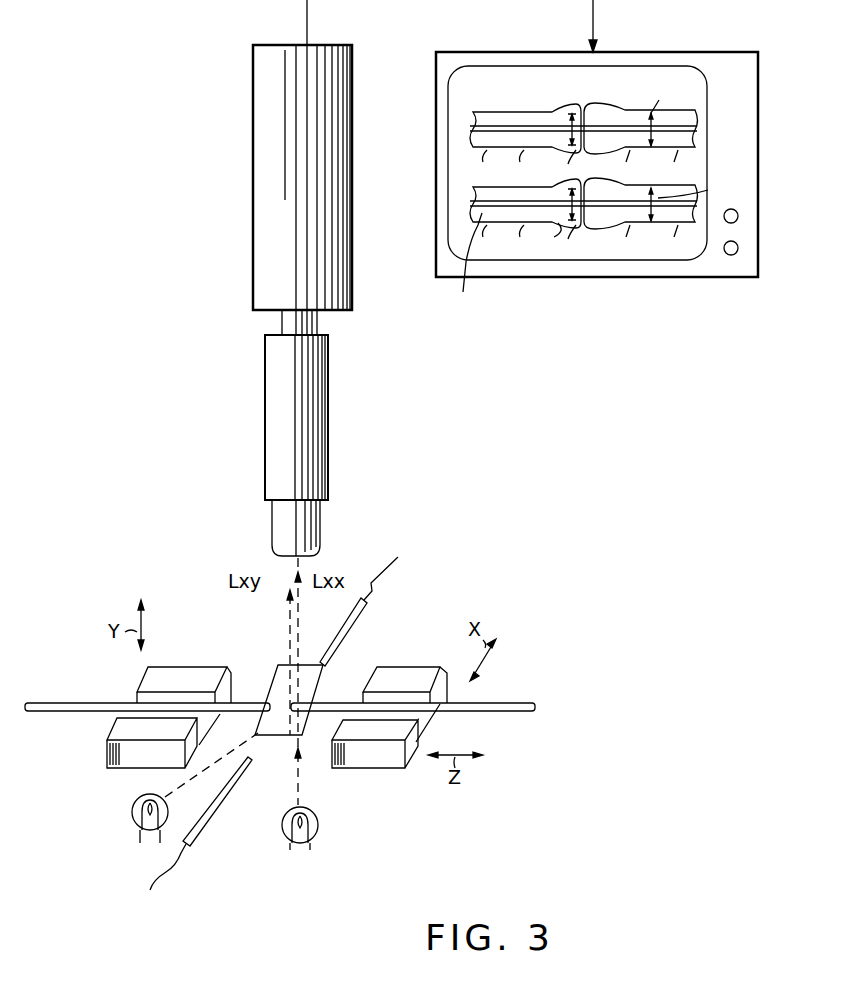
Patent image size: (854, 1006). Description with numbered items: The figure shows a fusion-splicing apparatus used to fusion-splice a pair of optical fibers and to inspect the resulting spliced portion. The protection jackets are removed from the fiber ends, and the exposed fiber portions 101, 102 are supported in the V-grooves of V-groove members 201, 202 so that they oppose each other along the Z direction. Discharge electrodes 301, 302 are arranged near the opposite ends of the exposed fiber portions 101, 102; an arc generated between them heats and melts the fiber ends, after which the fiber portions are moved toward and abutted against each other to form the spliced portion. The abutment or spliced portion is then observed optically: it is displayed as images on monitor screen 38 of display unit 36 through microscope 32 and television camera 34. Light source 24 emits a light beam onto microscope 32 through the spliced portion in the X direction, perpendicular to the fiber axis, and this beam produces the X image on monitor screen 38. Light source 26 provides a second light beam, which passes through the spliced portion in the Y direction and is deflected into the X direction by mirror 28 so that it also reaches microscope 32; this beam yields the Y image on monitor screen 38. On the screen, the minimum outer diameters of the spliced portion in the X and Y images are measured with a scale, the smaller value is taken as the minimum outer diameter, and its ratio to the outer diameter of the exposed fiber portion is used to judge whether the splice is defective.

The exposed fiber portion 101 is at (62, 702).
The exposed fiber portion 102 is at (536, 702).
The V-groove member 201 is at (106, 762).
The V-groove member 202 is at (358, 770).
The light source 24 is at (318, 832).
The light source 26 is at (132, 813).
The mirror 28 is at (272, 683).
The discharge electrode 301 is at (206, 824).
The discharge electrode 302 is at (357, 620).
The microscope 32 is at (265, 405).
The television camera 34 is at (253, 240).
The display unit 36 is at (662, 52).
The monitor screen 38 is at (592, 262).